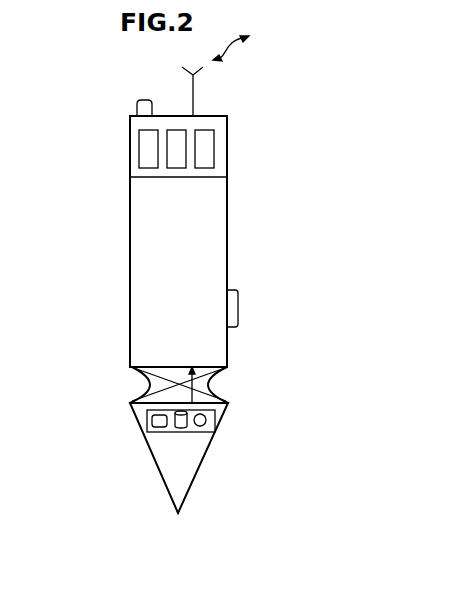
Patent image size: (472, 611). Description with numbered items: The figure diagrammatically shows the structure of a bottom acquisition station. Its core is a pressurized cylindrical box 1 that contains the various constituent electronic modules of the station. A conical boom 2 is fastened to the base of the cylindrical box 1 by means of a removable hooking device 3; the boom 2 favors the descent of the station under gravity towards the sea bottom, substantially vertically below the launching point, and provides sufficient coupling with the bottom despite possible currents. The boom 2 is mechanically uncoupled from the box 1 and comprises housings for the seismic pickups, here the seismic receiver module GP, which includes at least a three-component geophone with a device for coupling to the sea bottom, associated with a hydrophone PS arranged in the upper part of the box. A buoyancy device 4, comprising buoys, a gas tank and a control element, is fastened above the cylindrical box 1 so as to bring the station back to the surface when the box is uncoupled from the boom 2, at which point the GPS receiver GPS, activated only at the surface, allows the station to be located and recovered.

The pressurized cylindrical box 1 is at (227, 258).
The conical boom 2 is at (208, 453).
The removable hooking device 3 is at (220, 384).
The buoyancy device 4 is at (225, 122).
The GPS receiver GPS is at (135, 102).
The hydrophone PS is at (240, 308).
The seismic receiver module GP is at (217, 418).